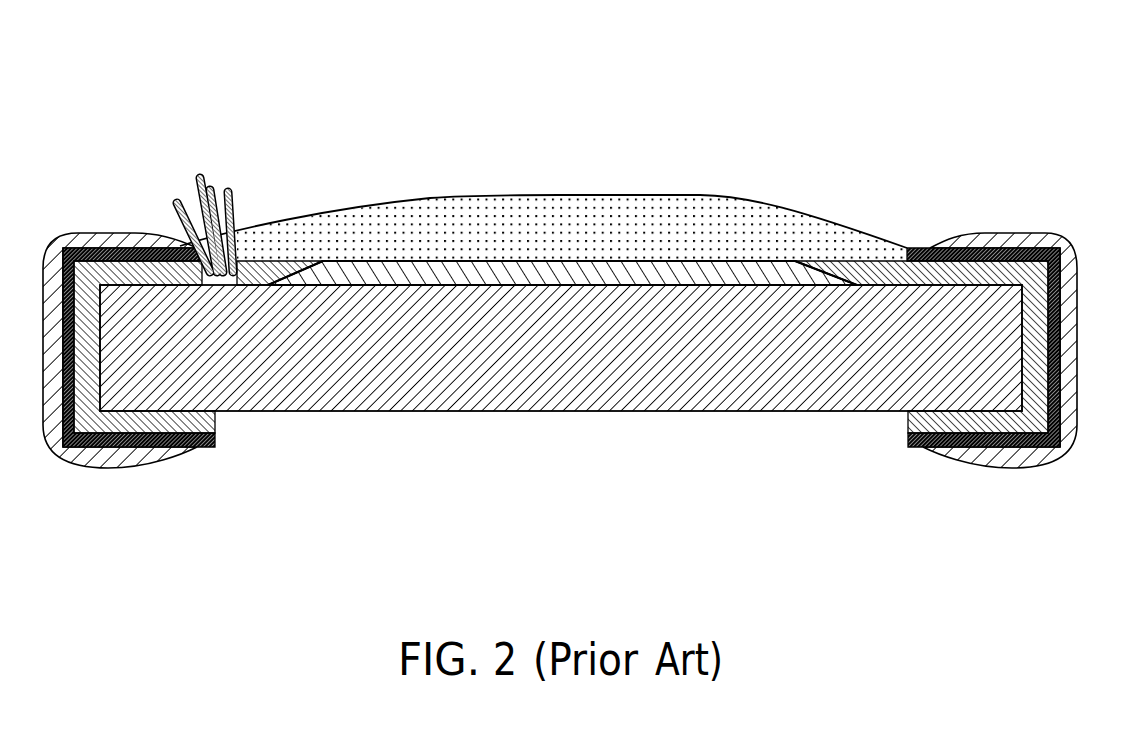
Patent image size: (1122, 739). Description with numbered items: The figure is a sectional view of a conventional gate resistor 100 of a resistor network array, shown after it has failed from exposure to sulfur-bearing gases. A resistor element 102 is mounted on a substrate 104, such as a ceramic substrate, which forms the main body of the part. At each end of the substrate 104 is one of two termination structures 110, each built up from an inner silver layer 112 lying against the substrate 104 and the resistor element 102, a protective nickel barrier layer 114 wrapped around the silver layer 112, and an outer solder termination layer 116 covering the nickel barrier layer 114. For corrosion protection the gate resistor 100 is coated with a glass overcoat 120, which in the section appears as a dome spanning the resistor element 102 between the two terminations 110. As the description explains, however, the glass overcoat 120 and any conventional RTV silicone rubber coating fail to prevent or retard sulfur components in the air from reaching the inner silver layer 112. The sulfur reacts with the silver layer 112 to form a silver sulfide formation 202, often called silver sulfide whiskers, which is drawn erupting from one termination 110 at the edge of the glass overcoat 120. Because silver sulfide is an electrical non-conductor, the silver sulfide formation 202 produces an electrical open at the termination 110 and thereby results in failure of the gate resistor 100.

The gate resistor 100 is at (556, 290).
The resistor element 102 is at (563, 270).
The substrate 104 is at (528, 380).
The termination structure 110 is at (556, 291).
The inner Ag (silver) layer 112 is at (128, 276).
The protective Ni (nickel) barrier layer 114 is at (215, 440).
The outer solder termination layer 116 is at (130, 455).
The glass overcoat 120 is at (452, 207).
The silver sulfide formation 202 is at (204, 180).